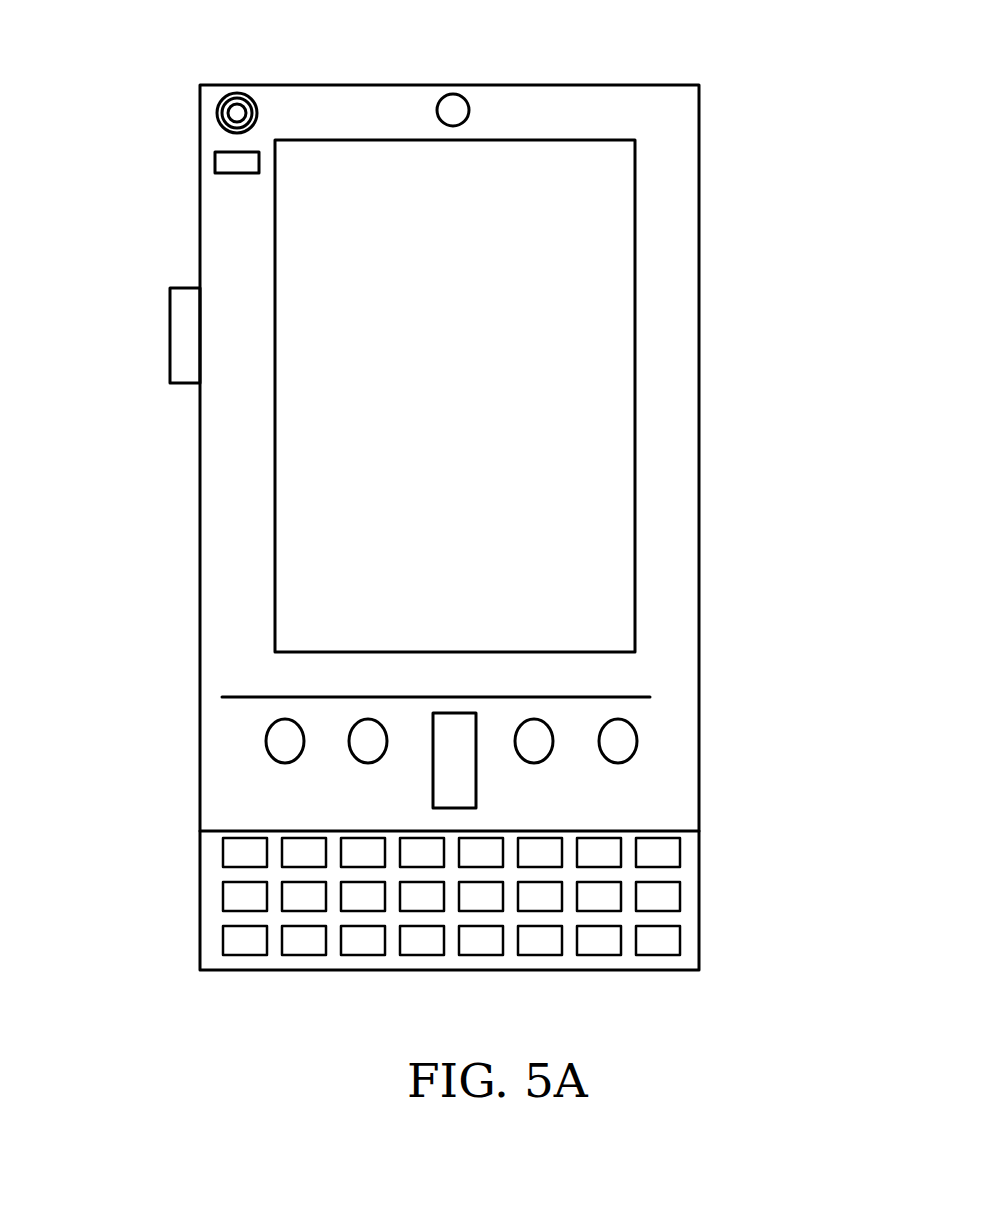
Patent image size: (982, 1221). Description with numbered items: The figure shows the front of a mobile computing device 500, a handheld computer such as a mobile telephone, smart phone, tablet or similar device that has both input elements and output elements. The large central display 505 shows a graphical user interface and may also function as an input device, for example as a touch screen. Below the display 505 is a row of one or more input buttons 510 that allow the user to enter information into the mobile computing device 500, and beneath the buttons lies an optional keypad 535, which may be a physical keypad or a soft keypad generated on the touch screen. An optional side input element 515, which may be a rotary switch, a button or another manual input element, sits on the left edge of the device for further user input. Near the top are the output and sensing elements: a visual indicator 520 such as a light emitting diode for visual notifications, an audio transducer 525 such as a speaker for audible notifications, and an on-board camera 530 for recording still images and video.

The mobile computing device 500 is at (685, 105).
The display 505 is at (385, 565).
The input buttons 510 is at (453, 767).
The side input element 515 is at (170, 337).
The visual indicator 520 is at (216, 166).
The audio transducer 525 is at (217, 114).
The on-board camera 530 is at (465, 108).
The keypad 535 is at (210, 945).